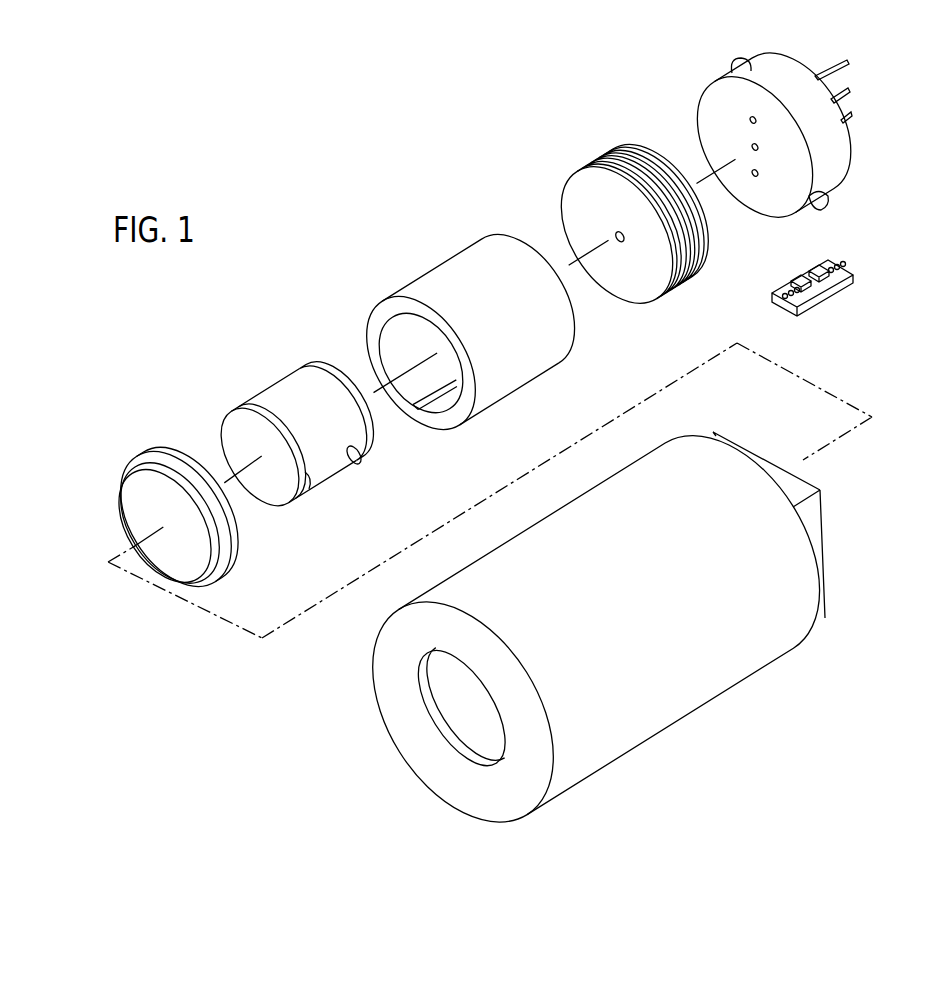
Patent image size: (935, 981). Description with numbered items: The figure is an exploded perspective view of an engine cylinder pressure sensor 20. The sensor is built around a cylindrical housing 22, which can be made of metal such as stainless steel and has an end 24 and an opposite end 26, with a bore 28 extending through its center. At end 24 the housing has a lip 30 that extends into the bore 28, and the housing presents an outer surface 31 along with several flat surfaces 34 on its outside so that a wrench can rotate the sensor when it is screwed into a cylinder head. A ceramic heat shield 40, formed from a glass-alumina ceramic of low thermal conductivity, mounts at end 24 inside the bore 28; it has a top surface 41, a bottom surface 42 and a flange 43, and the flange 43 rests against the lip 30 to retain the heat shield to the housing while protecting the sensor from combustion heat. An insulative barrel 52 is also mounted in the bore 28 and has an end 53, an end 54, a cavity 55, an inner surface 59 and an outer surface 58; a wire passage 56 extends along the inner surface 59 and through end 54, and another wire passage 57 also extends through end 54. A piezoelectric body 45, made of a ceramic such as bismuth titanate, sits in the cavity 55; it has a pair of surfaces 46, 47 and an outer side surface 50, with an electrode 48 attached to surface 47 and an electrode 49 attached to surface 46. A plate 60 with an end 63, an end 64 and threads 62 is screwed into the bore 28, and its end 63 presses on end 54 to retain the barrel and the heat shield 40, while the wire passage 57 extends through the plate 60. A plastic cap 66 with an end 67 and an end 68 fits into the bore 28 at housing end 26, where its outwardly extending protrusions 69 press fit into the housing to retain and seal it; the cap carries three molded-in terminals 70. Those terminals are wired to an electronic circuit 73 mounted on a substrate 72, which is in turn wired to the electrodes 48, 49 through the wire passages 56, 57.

The engine cylinder pressure sensor 20 is at (332, 192).
The cylindrical housing 22 is at (610, 628).
The end 24 is at (400, 750).
The end 26 is at (822, 524).
The bore 28 is at (457, 716).
The lip 30 is at (418, 695).
The outer surface 31 is at (750, 653).
The flat surfaces 34 is at (816, 548).
The ceramic heat shield 40 is at (190, 496).
The top surface 41 is at (238, 540).
The bottom surface 42 is at (128, 500).
The flange 43 is at (205, 582).
The piezoelectric body 45 is at (302, 405).
The surface 46 is at (357, 465).
The surface 47 is at (320, 478).
The electrode 48 is at (237, 430).
The electrode 49 is at (338, 373).
The outer side surface 50 is at (294, 388).
The insulative barrel 52 is at (465, 323).
The end 53 is at (432, 300).
The end 54 is at (523, 232).
The cavity 55 is at (407, 323).
The wire passage 56 is at (422, 408).
The wire passage 57 is at (616, 229).
The outer surface 58 is at (518, 367).
The inner surface 59 is at (390, 331).
The plate 60 is at (630, 220).
The threads 62 is at (680, 287).
The end 63 is at (643, 298).
The end 64 is at (657, 153).
The cap 66 is at (792, 144).
The end 67 is at (788, 210).
The end 68 is at (850, 153).
The protrusions 69 is at (730, 63).
The terminals 70 is at (848, 64).
The substrate 72 is at (828, 281).
The electronic circuit 73 is at (812, 265).